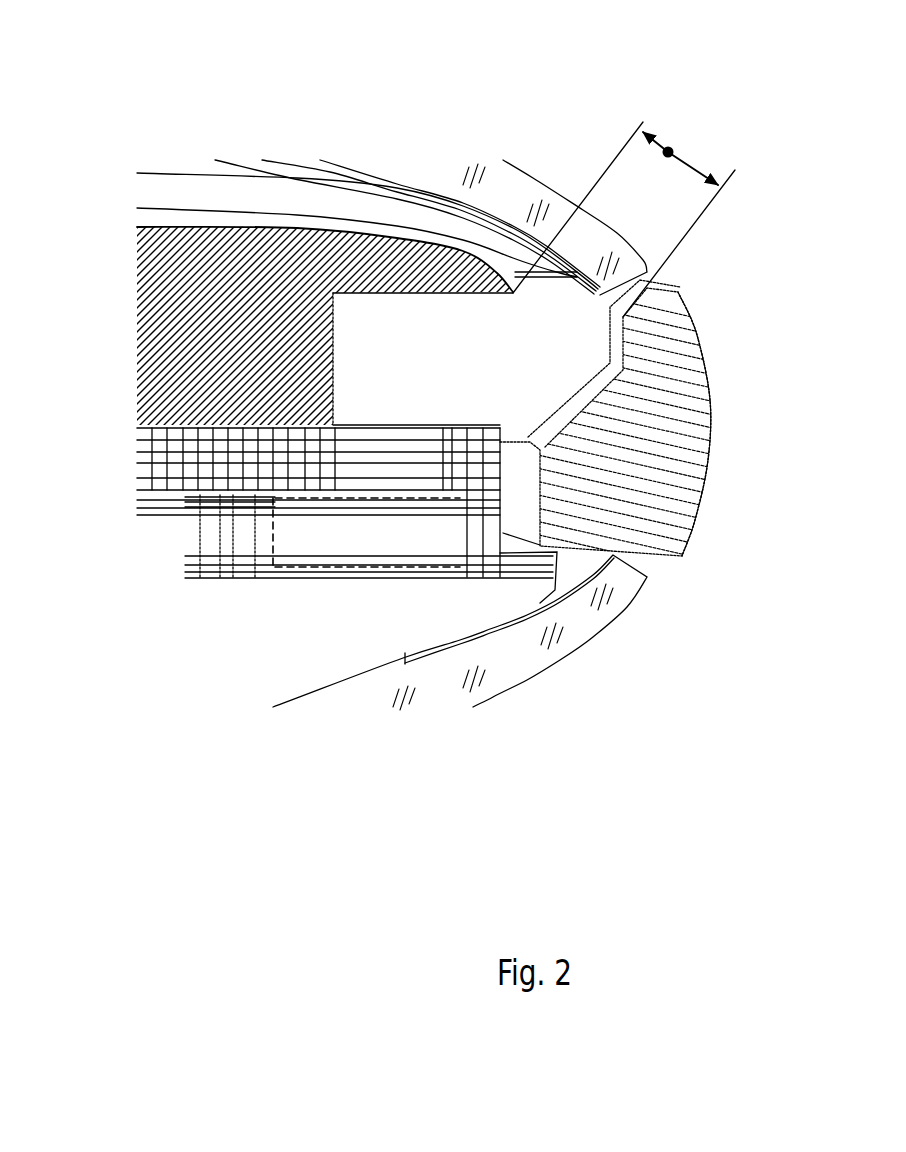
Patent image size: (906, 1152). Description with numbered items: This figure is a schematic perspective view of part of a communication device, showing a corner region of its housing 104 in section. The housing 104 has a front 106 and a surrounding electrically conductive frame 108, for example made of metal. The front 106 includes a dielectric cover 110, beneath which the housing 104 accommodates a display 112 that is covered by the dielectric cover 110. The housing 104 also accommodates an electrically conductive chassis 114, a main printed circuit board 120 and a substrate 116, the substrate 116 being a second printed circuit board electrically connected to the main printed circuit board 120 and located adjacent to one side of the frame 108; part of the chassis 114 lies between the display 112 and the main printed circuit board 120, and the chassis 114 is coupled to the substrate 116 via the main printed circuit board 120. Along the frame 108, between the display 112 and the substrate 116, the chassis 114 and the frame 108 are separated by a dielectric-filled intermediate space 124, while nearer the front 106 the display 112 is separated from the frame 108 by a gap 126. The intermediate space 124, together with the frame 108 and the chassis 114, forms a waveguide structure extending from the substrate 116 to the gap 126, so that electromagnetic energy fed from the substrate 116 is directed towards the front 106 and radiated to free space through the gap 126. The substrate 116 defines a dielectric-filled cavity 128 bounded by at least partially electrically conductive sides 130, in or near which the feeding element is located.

The housing 104 is at (692, 316).
The front 106 is at (544, 177).
The electrically conductive frame 108 is at (670, 530).
The dielectric cover 110 is at (508, 178).
The display 112 is at (292, 203).
The electrically conductive chassis 114 is at (362, 258).
The substrate 116 is at (230, 557).
The main printed circuit board 120 is at (168, 465).
The dielectric-filled intermediate space 124 is at (430, 365).
The gap 126 is at (668, 152).
The dielectric-filled cavity 128 is at (330, 567).
The electrically conductive sides 130 is at (484, 530).